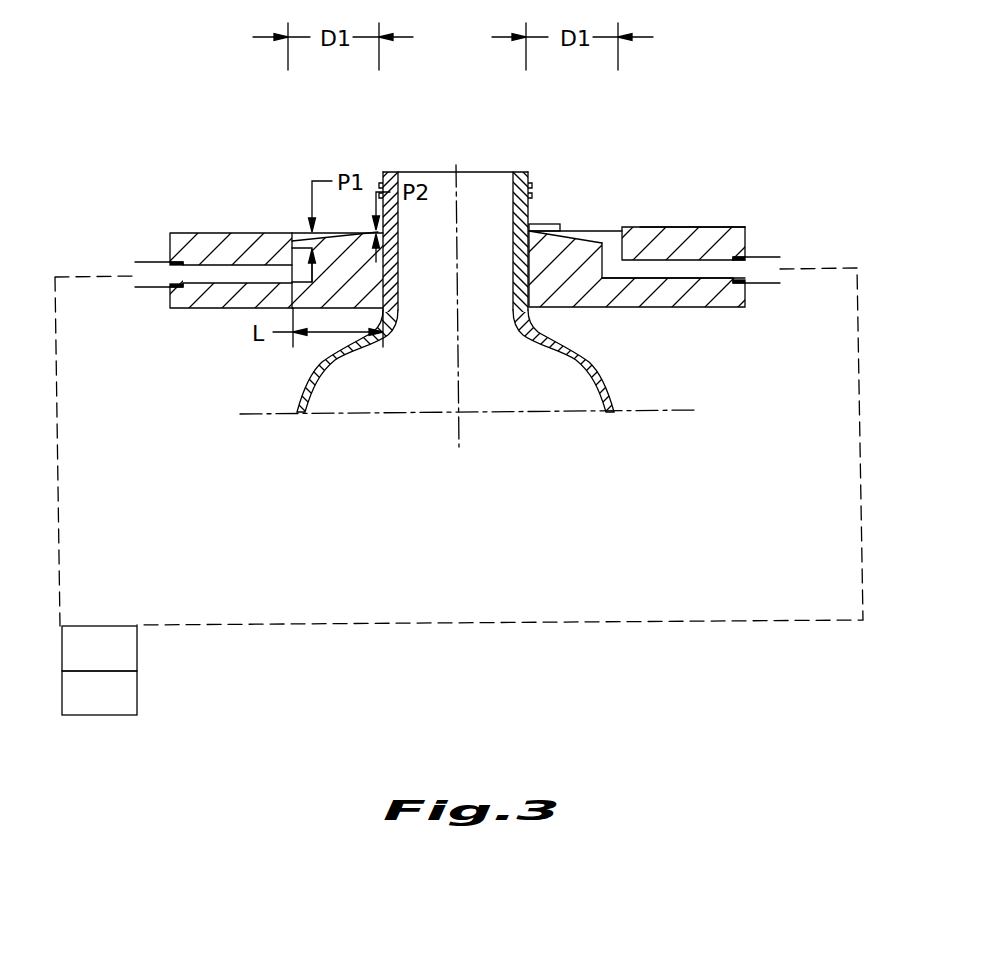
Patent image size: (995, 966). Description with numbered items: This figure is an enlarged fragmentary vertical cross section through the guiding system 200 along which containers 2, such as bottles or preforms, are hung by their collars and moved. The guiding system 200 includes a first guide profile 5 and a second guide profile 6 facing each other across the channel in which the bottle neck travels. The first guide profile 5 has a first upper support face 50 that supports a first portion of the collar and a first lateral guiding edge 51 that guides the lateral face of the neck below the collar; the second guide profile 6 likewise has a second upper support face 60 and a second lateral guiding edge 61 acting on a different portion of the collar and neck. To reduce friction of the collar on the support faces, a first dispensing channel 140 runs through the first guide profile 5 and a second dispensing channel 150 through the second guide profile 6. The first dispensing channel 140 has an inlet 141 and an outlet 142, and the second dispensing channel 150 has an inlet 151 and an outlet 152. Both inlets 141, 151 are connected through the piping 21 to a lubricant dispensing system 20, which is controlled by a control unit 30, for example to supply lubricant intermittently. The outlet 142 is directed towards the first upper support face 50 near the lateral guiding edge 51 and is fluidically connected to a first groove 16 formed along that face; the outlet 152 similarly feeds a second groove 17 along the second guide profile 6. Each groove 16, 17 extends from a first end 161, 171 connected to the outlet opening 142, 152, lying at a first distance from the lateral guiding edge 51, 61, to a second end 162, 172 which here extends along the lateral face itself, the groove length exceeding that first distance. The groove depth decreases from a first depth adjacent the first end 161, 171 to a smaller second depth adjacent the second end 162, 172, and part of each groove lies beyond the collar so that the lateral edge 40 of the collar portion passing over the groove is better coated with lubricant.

The guiding system 200 is at (170, 98).
The container 2 is at (290, 433).
The first guide profile 5 is at (187, 218).
The second guide profile 6 is at (767, 212).
The first groove 16 is at (333, 232).
The second groove 17 is at (602, 238).
The lubricant dispensing system 20 is at (99, 648).
The piping 21 is at (58, 506).
The control unit 30 is at (99, 693).
The lateral edge of the collar portion 40 is at (560, 224).
The first upper support face 50 is at (306, 232).
The first lateral guiding edge 51 is at (392, 272).
The second upper support face 60 is at (727, 226).
The second lateral guiding edge 61 is at (514, 275).
The first dispensing channel 140 is at (225, 255).
The inlet 141 is at (175, 260).
The outlet opening 142 is at (290, 248).
The second dispensing channel 150 is at (661, 283).
The inlet 151 is at (743, 252).
The outlet opening 152 is at (680, 227).
The first end of the first groove 161 is at (290, 262).
The second end of the first groove 162 is at (378, 232).
The first end of the second groove 171 is at (617, 231).
The second end of the second groove 172 is at (527, 227).